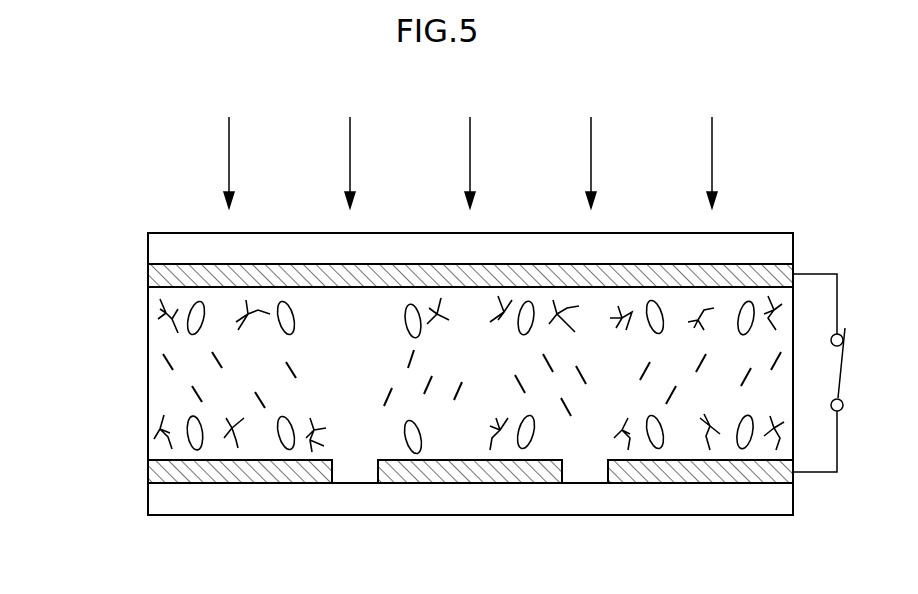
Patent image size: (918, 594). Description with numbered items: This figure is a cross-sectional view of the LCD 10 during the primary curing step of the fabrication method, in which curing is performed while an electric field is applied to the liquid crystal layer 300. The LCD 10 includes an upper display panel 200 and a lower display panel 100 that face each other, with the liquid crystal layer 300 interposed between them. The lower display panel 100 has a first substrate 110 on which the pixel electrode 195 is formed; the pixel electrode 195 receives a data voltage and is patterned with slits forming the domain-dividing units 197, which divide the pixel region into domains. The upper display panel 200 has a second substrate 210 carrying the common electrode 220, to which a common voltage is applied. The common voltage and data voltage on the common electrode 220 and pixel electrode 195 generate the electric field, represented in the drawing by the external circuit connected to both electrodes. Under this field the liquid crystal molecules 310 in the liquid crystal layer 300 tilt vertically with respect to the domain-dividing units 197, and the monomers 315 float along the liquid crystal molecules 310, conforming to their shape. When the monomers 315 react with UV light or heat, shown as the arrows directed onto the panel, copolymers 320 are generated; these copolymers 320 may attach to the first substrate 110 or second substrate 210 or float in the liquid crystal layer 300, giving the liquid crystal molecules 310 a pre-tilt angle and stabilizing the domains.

The LCD 10 is at (458, 571).
The lower display panel 100 is at (414, 505).
The first substrate 110 is at (160, 499).
The pixel electrode 195 is at (160, 469).
The domain-dividing units 197 is at (599, 469).
The upper display panel 200 is at (414, 260).
The second substrate 210 is at (160, 246).
The common electrode 220 is at (160, 275).
The liquid crystal layer 300 is at (409, 372).
The liquid crystal molecules 310 is at (296, 318).
The monomers 315 is at (430, 383).
The copolymers 320 is at (162, 314).